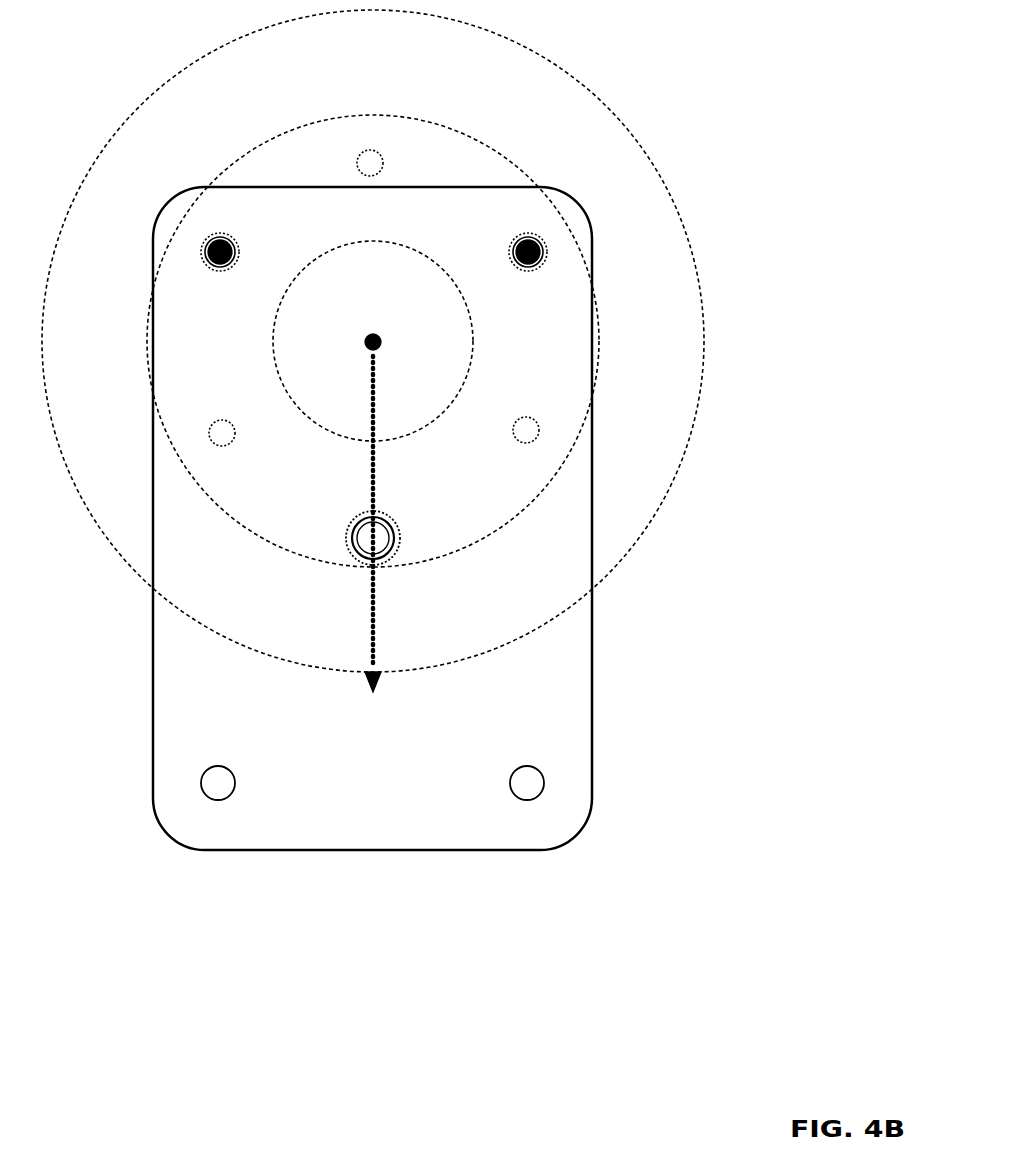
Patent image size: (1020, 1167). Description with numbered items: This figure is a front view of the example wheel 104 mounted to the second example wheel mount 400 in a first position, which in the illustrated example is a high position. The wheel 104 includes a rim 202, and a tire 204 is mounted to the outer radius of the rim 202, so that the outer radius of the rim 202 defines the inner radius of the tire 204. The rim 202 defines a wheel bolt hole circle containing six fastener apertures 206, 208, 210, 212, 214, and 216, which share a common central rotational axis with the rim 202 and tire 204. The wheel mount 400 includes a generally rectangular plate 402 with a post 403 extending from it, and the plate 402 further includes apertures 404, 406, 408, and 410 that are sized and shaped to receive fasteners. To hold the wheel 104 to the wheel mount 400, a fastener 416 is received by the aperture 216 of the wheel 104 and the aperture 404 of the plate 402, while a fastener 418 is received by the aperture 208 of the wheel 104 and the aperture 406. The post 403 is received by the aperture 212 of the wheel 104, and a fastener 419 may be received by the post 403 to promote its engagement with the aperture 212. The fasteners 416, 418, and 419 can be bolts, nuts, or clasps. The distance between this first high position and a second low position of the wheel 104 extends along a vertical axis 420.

The wheel 104 is at (400, 339).
The rim 202 is at (482, 143).
The tire 204 is at (662, 178).
The aperture 206 is at (366, 150).
The aperture 208 is at (540, 240).
The aperture 210 is at (514, 433).
The aperture 212 is at (385, 544).
The aperture 214 is at (210, 428).
The aperture 216 is at (233, 266).
The wheel mount 400 is at (400, 498).
The plate 402 is at (592, 640).
The post 403 is at (378, 562).
The aperture 404 is at (260, 287).
The aperture 406 is at (552, 263).
The aperture 408 is at (519, 768).
The aperture 410 is at (230, 768).
The fastener 416 is at (208, 268).
The fastener 418 is at (533, 266).
The fastener 419 is at (364, 517).
The axis 420 is at (369, 463).